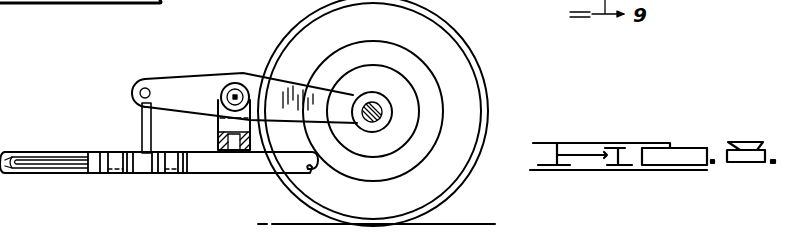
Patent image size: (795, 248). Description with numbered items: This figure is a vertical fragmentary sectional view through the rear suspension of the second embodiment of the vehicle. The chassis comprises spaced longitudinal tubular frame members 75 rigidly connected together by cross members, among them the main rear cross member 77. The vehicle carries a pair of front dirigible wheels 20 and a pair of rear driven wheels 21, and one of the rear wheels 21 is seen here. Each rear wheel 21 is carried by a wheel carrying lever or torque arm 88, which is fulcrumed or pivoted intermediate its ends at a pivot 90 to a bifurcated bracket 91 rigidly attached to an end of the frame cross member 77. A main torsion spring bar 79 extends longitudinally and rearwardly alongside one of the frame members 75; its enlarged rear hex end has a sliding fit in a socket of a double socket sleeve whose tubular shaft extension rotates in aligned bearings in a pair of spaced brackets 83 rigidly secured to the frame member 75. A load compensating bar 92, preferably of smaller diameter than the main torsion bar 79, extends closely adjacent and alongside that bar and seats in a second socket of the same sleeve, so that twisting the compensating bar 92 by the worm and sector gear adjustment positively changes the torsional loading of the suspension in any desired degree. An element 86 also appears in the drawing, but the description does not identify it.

The front dirigible wheels 20 is at (112, 0).
The rear driven wheels 21 is at (476, 71).
The frame members 75 is at (262, 167).
The main rear cross member 77 is at (243, 152).
The main torsion spring bar 79 is at (13, 158).
The brackets 83 is at (115, 192).
The link 86 is at (142, 112).
The wheel carrying lever 88 is at (197, 79).
The pivot 90 is at (240, 83).
The bifurcated bracket 91 is at (224, 124).
The load compensating bar 92 is at (50, 162).